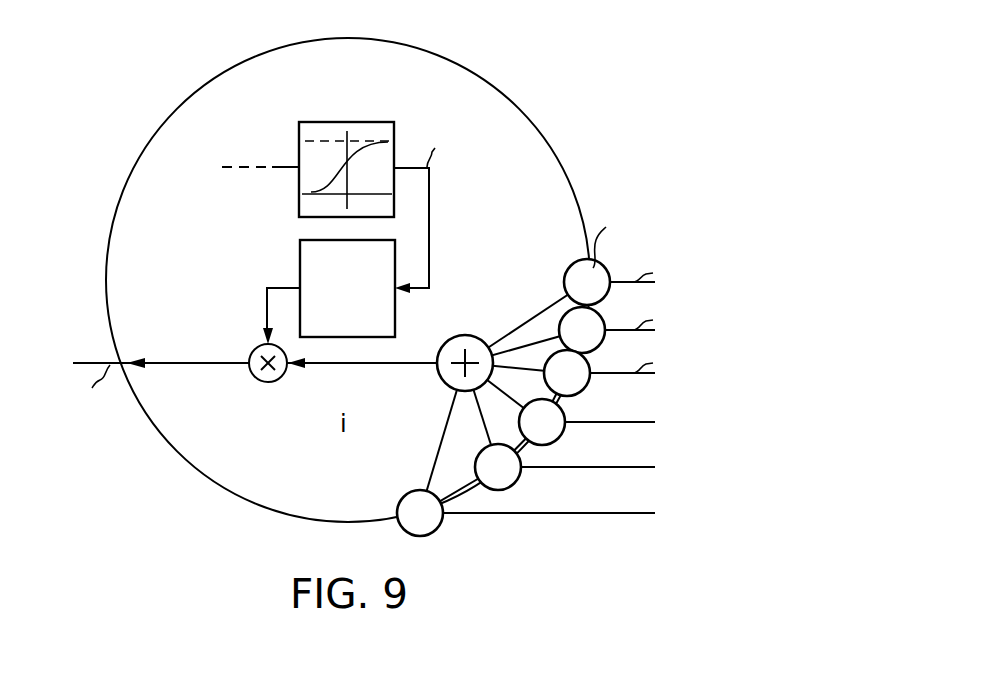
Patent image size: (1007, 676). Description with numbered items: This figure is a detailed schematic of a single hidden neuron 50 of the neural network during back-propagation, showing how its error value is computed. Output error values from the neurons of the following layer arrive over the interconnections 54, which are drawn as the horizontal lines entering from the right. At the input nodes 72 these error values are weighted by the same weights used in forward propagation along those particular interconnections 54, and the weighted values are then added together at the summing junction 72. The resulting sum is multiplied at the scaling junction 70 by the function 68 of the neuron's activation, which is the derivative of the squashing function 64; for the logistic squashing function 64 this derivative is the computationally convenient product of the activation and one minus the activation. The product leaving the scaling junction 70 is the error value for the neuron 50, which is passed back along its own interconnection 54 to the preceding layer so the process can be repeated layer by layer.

The hidden neuron 50 is at (517, 108).
The interconnections 54 is at (80, 333).
The squashing function 64 is at (340, 122).
The function of the activation 68 is at (300, 244).
The scaling junction 70 is at (265, 383).
The input nodes / summing junction 72 is at (465, 335).